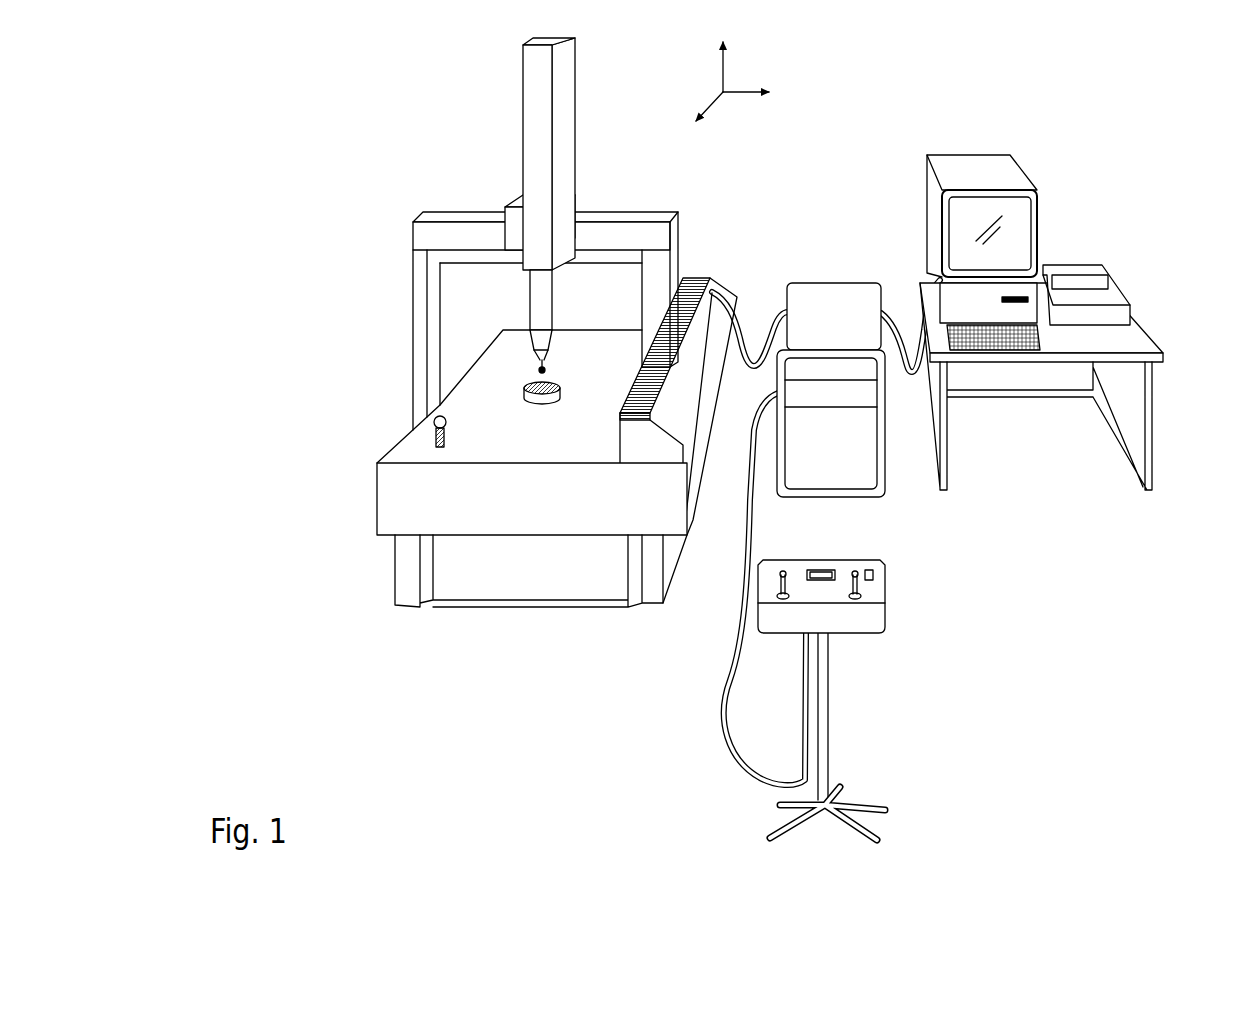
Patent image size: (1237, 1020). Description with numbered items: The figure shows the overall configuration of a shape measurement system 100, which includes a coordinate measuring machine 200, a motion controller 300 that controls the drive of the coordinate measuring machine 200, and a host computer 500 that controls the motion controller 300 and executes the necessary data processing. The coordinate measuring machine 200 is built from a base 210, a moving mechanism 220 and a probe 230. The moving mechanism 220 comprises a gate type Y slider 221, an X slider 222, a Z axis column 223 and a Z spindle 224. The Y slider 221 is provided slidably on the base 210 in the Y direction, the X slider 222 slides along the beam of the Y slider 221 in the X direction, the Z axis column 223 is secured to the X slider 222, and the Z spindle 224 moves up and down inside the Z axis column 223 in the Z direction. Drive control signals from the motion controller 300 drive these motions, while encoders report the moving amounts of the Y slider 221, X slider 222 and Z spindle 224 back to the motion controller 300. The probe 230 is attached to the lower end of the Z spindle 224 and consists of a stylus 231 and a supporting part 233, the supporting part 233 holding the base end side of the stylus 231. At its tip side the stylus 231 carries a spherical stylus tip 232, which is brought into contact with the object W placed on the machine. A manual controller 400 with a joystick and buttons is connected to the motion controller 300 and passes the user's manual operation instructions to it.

The shape measurement system 100 is at (715, 432).
The coordinate measuring machine 200 is at (508, 322).
The base 210 is at (502, 442).
The moving mechanism 220 is at (513, 234).
The gate type Y slider 221 is at (660, 238).
The X slider 222 is at (583, 205).
The Z axis column 223 is at (570, 80).
The Z spindle 224 is at (553, 290).
The probe 230 is at (538, 395).
The stylus 231 is at (548, 370).
The stylus tip 232 is at (560, 384).
The supporting part 233 is at (552, 338).
The motion controller 300 is at (840, 313).
The manual controller 400 is at (872, 595).
The host computer 500 is at (1018, 268).
The object W is at (521, 398).